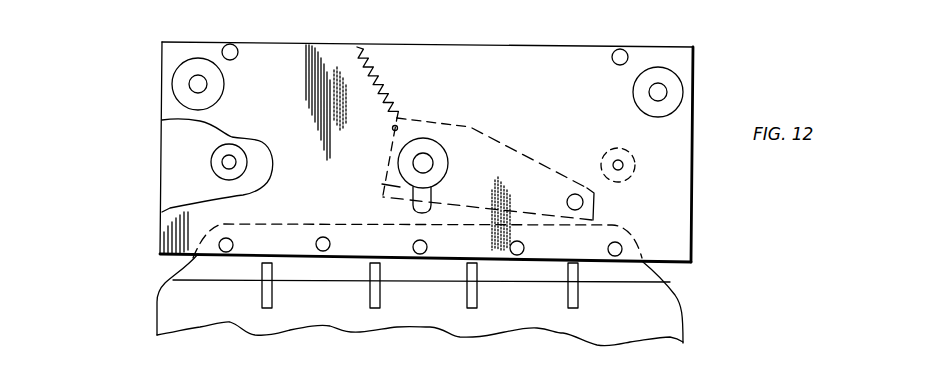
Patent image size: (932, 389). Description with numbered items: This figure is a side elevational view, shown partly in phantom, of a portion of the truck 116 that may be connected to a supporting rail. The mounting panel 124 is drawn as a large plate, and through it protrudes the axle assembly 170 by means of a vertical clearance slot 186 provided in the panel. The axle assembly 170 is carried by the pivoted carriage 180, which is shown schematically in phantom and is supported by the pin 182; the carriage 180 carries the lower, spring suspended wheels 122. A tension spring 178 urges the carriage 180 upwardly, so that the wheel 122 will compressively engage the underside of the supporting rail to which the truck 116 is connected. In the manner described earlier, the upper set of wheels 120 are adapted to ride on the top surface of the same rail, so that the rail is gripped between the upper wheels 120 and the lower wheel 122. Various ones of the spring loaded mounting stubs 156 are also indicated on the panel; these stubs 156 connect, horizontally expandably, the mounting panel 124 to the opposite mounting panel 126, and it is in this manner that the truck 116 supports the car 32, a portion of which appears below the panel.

The car 32 is at (157, 301).
The truck 116 is at (719, 80).
The upper set of wheels 120 is at (225, 90).
The lower, spring suspended wheels 122 is at (427, 138).
The mounting panel 124 is at (568, 69).
The opposite mounting panel 126 is at (203, 149).
The spring loaded mounting stubs 156 is at (237, 56).
The axle assembly 170 is at (423, 163).
The tension spring 178 is at (383, 77).
The pivoted carriage 180 is at (472, 127).
The pin 182 is at (593, 210).
The vertical clearance slot 186 is at (417, 200).